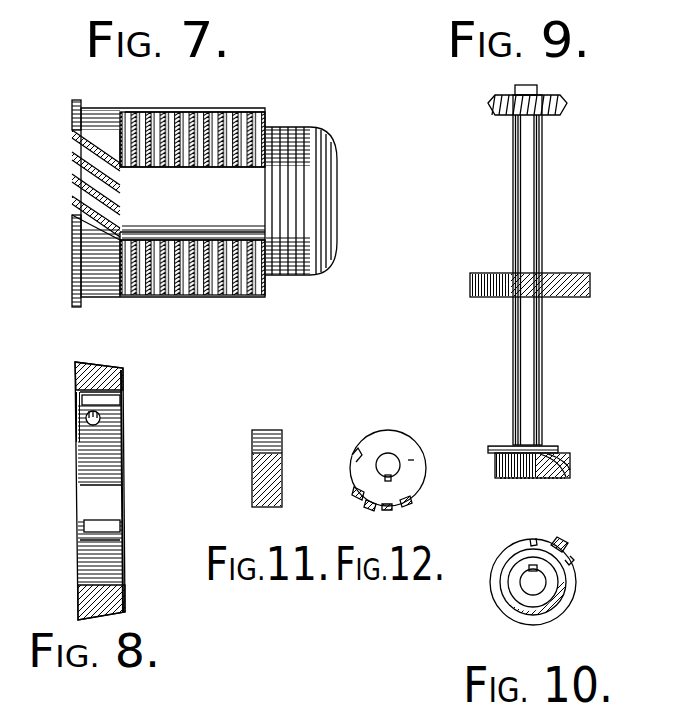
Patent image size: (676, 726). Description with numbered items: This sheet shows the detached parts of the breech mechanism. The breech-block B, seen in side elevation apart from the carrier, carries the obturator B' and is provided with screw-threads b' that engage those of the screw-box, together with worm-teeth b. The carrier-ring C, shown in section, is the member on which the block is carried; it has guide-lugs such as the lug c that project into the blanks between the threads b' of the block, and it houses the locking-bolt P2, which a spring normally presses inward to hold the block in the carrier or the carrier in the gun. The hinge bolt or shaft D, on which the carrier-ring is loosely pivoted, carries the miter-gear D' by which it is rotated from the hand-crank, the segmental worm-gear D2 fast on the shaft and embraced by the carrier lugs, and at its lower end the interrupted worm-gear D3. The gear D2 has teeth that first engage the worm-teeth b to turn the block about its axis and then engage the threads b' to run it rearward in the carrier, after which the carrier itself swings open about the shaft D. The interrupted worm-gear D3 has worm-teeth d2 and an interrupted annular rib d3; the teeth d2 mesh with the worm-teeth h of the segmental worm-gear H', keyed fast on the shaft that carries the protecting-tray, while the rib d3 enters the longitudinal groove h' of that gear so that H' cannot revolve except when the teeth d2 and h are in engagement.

In FIG. 7, the breech-block B is at (173, 184).
In FIG. 7, the screw-threads b' is at (192, 208).
In FIG. 7, the worm-teeth b is at (73, 185).
In FIG. 7, the obturator B' is at (322, 201).
In FIG. 8, the carrier-ring C is at (117, 502).
In FIG. 8, the guide-lug c is at (115, 423).
In FIG. 8, the locking-bolt P2 is at (86, 421).
In FIG. 11, the segmental worm-gear H' is at (267, 448).
In FIG. 12, the segmental worm-gear H' is at (388, 448).
In FIG. 11, the longitudinal groove h' is at (251, 451).
In FIG. 12, the longitudinal groove h' is at (344, 446).
In FIG. 11, the worm-teeth h is at (281, 480).
In FIG. 12, the worm-teeth h is at (380, 511).
In FIG. 9, the hinge bolt or shaft D is at (553, 265).
In FIG. 10, the hinge bolt or shaft D is at (494, 582).
In FIG. 9, the miter-gear D' is at (501, 124).
In FIG. 9, the segmental worm-gear D2 is at (590, 287).
In FIG. 9, the interrupted worm-gear D3 is at (575, 461).
In FIG. 10, the interrupted worm-gear D3 is at (560, 606).
In FIG. 9, the interrupted annular rib d3 is at (492, 451).
In FIG. 10, the interrupted annular rib d3 is at (525, 620).
In FIG. 9, the worm-teeth d2 is at (568, 477).
In FIG. 10, the worm-teeth d2 is at (558, 548).